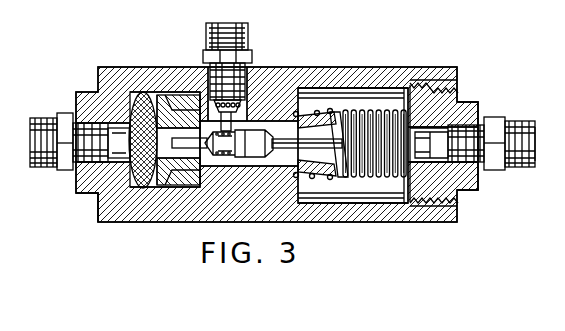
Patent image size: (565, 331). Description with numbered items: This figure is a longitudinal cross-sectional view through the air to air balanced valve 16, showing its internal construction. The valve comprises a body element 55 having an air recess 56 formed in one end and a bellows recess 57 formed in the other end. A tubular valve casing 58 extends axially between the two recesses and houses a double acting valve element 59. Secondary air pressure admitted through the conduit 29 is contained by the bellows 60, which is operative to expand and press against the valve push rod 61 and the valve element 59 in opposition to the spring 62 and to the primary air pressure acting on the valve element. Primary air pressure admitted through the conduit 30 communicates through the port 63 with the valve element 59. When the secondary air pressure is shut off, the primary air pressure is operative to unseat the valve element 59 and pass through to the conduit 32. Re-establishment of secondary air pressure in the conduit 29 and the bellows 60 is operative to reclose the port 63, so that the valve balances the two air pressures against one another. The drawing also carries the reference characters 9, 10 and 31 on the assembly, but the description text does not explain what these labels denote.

The valve assembly 9 is at (372, 103).
The valve housing end 10 is at (489, 98).
The air to air balanced valve 16 is at (433, 222).
The conduit 29 is at (505, 172).
The conduit 30 is at (52, 172).
The outlet connection 31 is at (540, 188).
The conduit 32 is at (206, 40).
The body element 55 is at (343, 78).
The air recess 56 is at (190, 170).
The bellows recess 57 is at (387, 114).
The tubular valve casing 58 is at (258, 127).
The double acting valve element 59 is at (243, 153).
The bellows 60 is at (420, 92).
The valve push rod 61 is at (315, 166).
The spring 62 is at (336, 168).
The port 63 is at (103, 222).